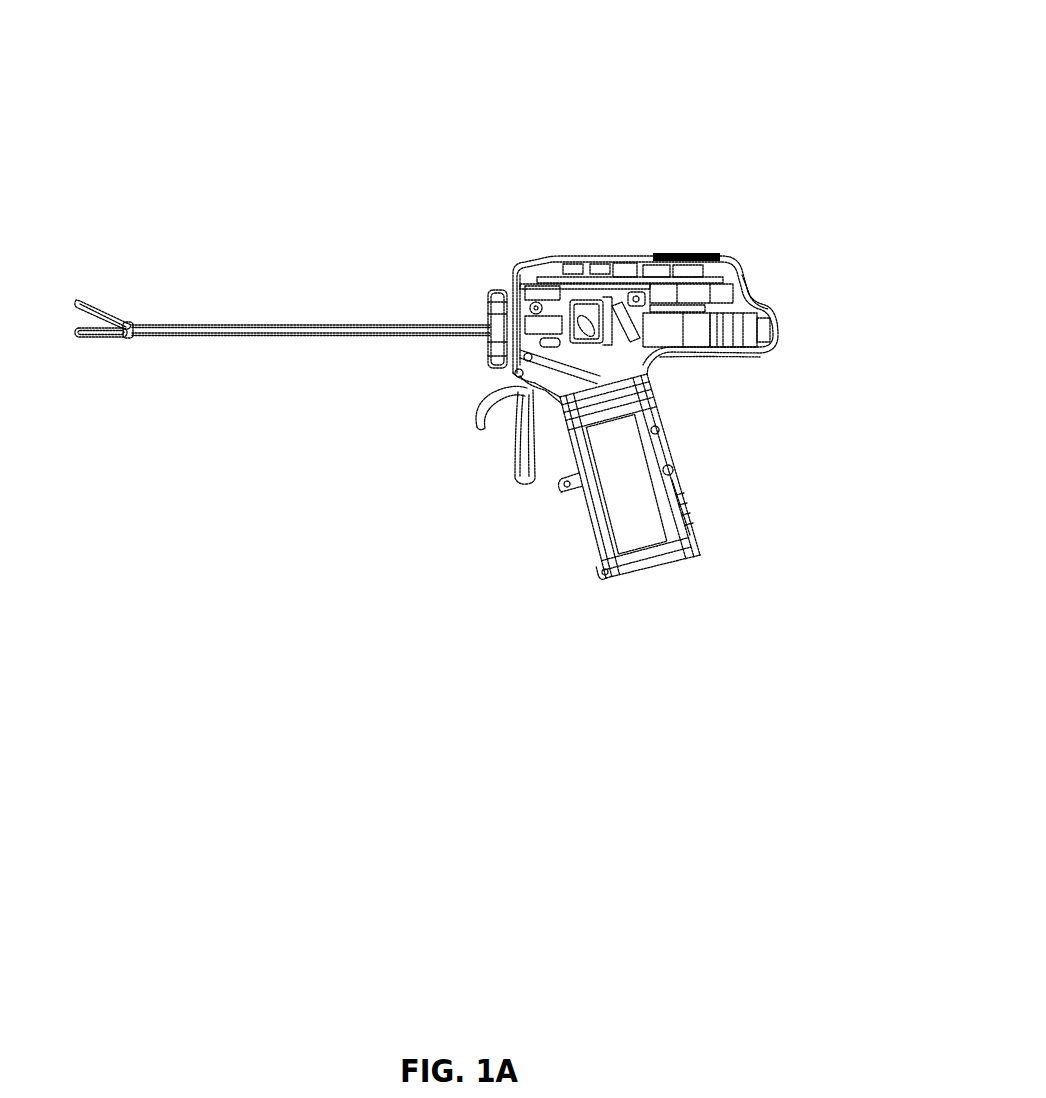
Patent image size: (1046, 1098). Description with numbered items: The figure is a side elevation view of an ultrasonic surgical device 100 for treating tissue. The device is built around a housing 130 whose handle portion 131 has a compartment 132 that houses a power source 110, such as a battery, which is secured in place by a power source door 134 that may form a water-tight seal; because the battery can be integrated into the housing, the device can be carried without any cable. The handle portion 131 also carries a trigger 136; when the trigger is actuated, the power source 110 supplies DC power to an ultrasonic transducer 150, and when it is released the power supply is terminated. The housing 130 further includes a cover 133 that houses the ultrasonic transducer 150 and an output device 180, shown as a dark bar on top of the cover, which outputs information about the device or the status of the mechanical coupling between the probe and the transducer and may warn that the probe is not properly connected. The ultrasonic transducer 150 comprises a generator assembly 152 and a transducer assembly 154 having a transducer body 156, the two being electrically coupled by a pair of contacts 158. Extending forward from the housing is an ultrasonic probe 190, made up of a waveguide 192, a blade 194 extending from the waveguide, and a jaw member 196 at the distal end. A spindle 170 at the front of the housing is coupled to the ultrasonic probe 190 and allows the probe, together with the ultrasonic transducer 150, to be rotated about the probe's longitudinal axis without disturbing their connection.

The ultrasonic surgical device 100 is at (514, 100).
The power source 110 is at (641, 515).
The housing 130 is at (665, 377).
The handle portion 131 is at (585, 514).
The compartment 132 is at (698, 533).
The cover 133 is at (754, 286).
The power source door 134 is at (649, 582).
The trigger 136 is at (513, 432).
The ultrasonic transducer 150 is at (726, 270).
The generator assembly 152 is at (625, 262).
The transducer assembly 154 is at (735, 368).
The transducer body 156 is at (745, 335).
The pair of contacts 158 is at (572, 307).
The spindle 170 is at (483, 352).
The output device 180 is at (680, 246).
The ultrasonic probe 190 is at (218, 305).
The waveguide 192 is at (330, 333).
The blade 194 is at (98, 333).
The jaw member 196 is at (99, 312).